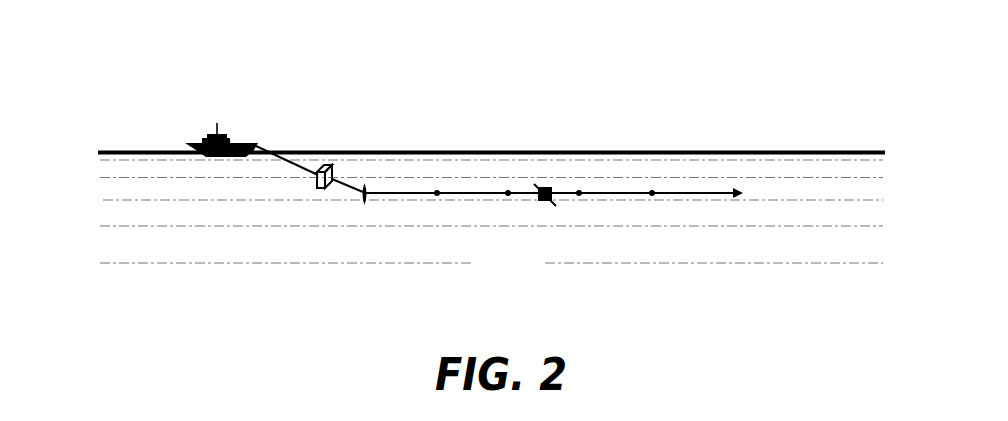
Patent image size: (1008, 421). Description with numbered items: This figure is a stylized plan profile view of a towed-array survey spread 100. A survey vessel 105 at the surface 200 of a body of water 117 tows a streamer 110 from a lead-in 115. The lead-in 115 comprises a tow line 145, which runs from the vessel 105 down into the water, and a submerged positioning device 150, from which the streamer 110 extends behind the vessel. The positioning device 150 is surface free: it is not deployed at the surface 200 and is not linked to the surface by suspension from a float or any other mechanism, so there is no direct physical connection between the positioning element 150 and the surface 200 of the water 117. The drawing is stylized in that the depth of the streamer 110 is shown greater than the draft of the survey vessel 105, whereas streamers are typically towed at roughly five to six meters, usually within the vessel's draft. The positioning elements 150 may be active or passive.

The towed-array survey spread 100 is at (127, 62).
The survey vessel 105 is at (203, 142).
The streamer 110 is at (757, 180).
The lead-in 115 is at (350, 94).
The body of water 117 is at (526, 260).
The tow line 145 is at (268, 147).
The submerged positioning device 150 is at (331, 165).
The surface of the water 200 is at (668, 150).